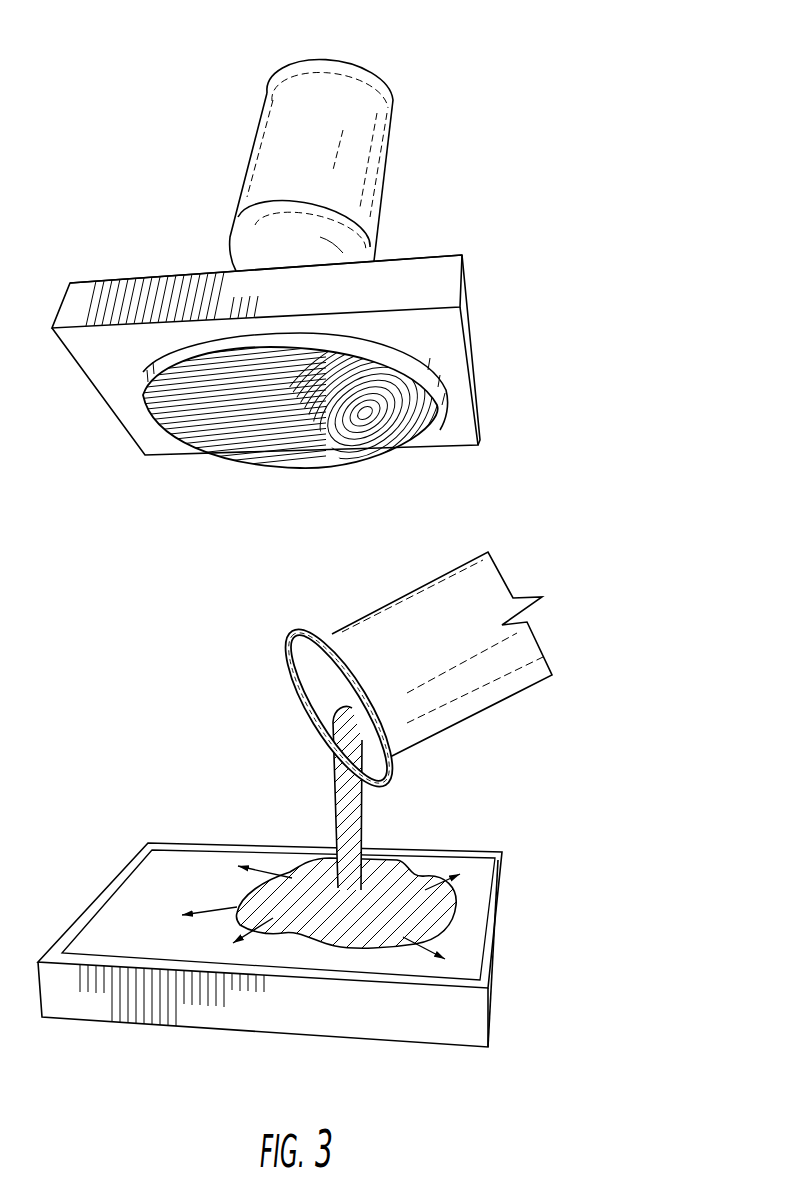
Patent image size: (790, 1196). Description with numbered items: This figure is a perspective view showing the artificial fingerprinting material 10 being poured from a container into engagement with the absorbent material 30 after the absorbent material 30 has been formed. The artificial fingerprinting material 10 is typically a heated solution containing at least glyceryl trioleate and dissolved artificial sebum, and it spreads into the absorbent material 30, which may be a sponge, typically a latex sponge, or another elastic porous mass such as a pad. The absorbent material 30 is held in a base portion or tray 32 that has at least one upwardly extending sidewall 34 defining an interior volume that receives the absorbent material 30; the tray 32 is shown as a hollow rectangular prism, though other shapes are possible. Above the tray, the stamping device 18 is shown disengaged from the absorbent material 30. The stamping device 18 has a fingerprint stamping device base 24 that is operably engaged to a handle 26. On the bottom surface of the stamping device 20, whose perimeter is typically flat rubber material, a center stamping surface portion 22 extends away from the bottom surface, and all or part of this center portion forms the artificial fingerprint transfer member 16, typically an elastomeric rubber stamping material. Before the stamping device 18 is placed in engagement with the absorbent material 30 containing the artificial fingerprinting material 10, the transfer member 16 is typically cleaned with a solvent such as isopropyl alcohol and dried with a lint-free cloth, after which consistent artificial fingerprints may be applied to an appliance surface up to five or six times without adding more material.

The artificial fingerprinting material 10 is at (352, 805).
The artificial fingerprint transfer member 16 is at (384, 428).
The stamping device 18 is at (392, 138).
The bottom surface of the stamping device 20 is at (341, 363).
The center stamping surface portion 22 is at (400, 357).
The fingerprint stamping device base 24 is at (430, 277).
The handle 26 is at (343, 98).
The absorbent material 30 is at (468, 923).
The tray 32 is at (335, 838).
The sidewall 34 is at (393, 1026).